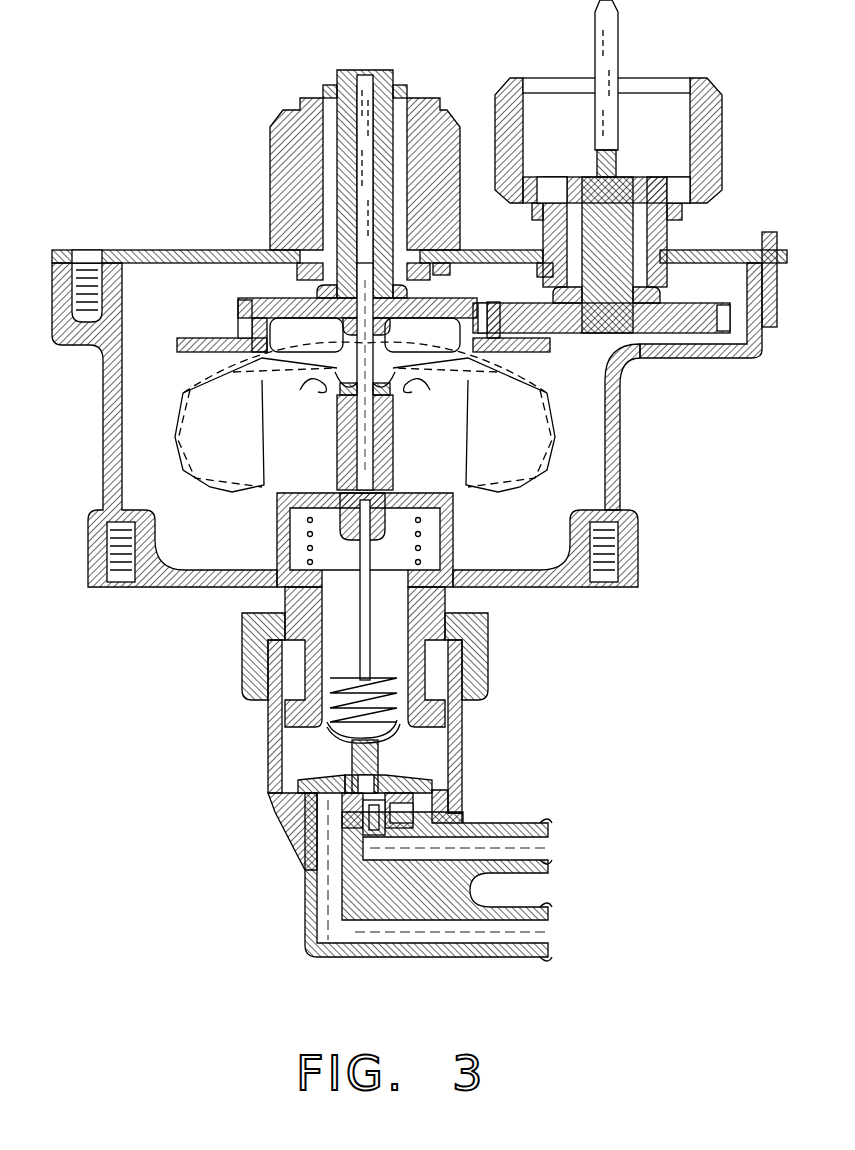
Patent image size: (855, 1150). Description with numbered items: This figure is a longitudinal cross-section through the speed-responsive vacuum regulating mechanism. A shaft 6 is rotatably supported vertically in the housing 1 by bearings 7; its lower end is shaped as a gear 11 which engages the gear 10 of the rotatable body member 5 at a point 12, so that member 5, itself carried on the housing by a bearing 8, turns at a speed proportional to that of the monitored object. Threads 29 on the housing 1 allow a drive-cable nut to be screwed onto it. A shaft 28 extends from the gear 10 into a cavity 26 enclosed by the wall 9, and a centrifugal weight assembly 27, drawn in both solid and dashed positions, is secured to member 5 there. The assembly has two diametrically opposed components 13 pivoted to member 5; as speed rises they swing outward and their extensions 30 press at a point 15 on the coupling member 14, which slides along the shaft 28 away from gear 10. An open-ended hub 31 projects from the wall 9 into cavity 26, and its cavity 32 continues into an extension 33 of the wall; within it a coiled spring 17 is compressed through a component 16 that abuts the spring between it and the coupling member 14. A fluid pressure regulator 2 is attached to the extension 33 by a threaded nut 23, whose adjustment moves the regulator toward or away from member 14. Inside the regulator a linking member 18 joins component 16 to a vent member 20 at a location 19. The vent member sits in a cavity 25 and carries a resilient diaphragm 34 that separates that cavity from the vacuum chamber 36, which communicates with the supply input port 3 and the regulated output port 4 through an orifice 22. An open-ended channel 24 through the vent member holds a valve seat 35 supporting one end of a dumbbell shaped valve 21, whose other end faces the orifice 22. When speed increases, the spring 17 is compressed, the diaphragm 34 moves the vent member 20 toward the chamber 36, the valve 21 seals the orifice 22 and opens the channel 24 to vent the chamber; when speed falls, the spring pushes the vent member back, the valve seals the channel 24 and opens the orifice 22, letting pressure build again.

The housing 1 is at (105, 428).
The fluid pressure regulator 2 is at (460, 722).
The fluid pressure supply input port 3 is at (552, 846).
The regulated fluid pressure output signal port 4 is at (540, 935).
The rotatable body member 5 is at (388, 78).
The shaft 6 is at (607, 48).
The bearings 7 is at (640, 237).
The bearing 8 is at (330, 125).
The wall 9 is at (613, 482).
The gear 10 is at (317, 298).
The gear 11 is at (683, 325).
The engagement point 12 is at (487, 317).
The components 13 is at (213, 443).
The coupling member 14 is at (343, 445).
The contact point 15 is at (330, 428).
The component 16 is at (402, 495).
The coiled spring 17 is at (420, 548).
The linking member 18 is at (367, 593).
The connection location 19 is at (397, 737).
The vent member 20 is at (397, 758).
The dumbbell shaped valve 21 is at (413, 827).
The orifice 22 is at (370, 843).
The threaded nut 23 is at (253, 653).
The open ended channel 24 is at (363, 747).
The cavity 25 is at (307, 758).
The cavity 26 is at (605, 425).
The centrifugal weight assembly 27 is at (528, 374).
The shaft 28 is at (367, 315).
The threads 29 is at (690, 115).
The extensions 30 is at (310, 395).
The open-ended hub 31 is at (287, 540).
The cavity 32 is at (300, 598).
The extension of wall 33 is at (417, 593).
The resilient diaphragm 34 is at (310, 787).
The valve seat 35 is at (347, 795).
The vacuum chamber 36 is at (420, 817).